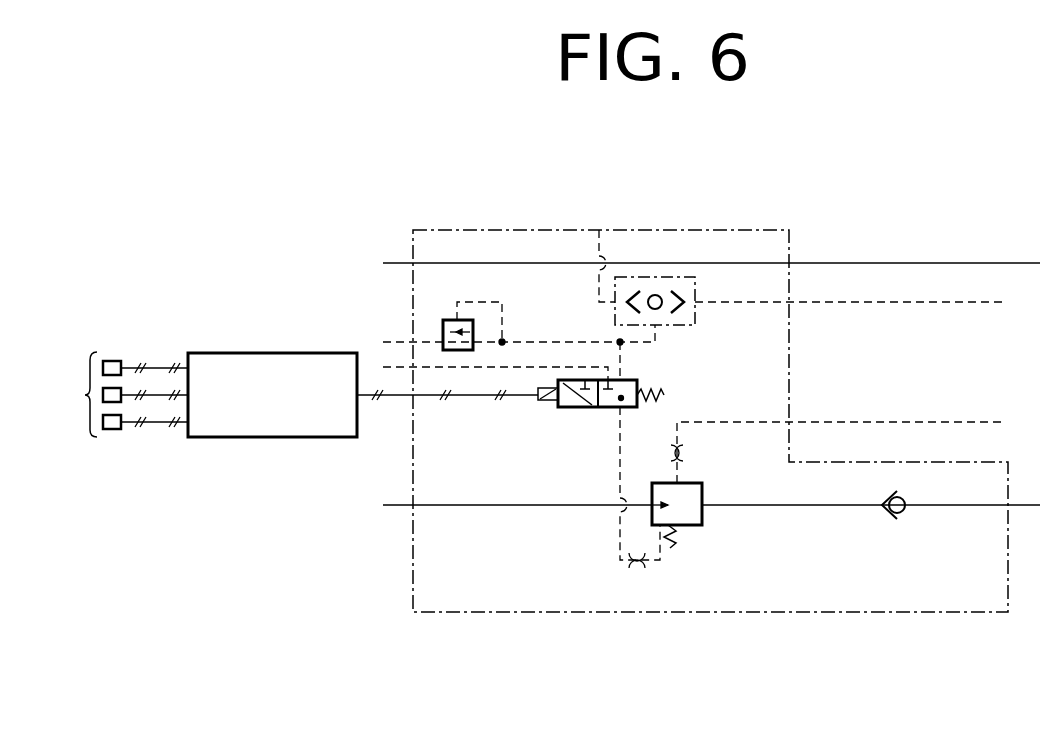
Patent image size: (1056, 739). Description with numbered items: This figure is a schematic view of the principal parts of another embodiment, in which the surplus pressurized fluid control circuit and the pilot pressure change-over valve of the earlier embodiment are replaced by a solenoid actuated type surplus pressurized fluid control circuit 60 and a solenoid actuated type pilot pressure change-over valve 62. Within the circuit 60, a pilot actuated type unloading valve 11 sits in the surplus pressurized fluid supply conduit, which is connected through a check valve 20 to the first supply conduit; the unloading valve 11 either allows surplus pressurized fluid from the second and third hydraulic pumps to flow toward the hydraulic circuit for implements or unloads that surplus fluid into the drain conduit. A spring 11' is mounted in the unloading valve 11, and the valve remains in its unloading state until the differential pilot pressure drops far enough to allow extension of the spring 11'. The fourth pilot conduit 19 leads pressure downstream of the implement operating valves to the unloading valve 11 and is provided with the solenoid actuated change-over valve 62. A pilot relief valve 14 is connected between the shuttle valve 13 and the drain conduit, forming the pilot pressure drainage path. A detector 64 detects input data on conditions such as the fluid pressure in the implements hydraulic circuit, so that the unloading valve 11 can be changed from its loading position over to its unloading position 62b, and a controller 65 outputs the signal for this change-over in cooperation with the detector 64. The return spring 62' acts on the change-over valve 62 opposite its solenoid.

The pilot actuated type unloading valve 11 is at (709, 518).
The spring 11' is at (704, 560).
The shuttle valve 13 is at (613, 323).
The pilot relief valve 14 is at (443, 322).
The fourth pilot conduit 19 is at (620, 455).
The check valve 20 is at (890, 516).
The solenoid actuated type surplus pressurized fluid control circuit 60 is at (789, 400).
The solenoid actuated type pilot pressure change-over valve 62 is at (583, 423).
The unloading position 62b is at (553, 407).
The return spring 62' is at (674, 375).
The detector 64 is at (120, 394).
The controller 65 is at (262, 353).